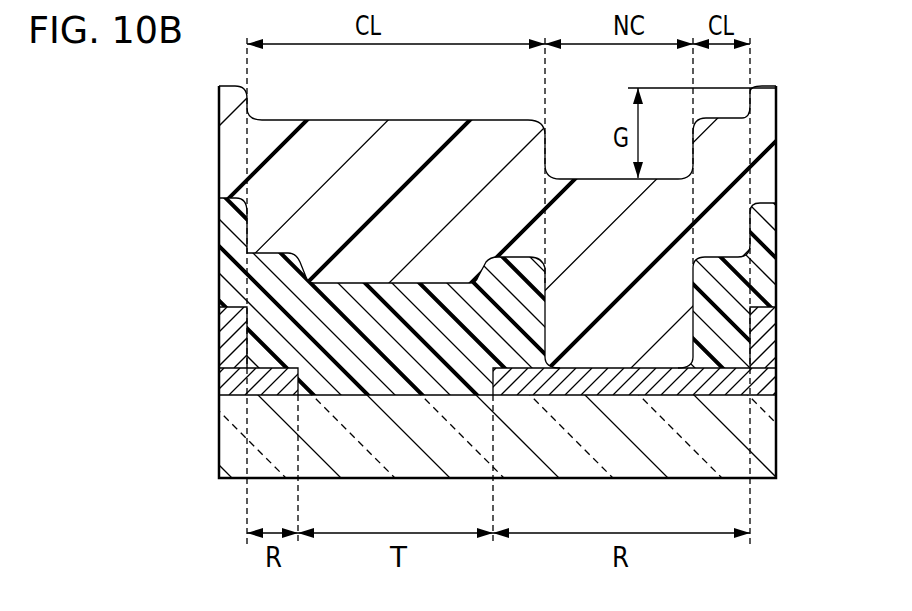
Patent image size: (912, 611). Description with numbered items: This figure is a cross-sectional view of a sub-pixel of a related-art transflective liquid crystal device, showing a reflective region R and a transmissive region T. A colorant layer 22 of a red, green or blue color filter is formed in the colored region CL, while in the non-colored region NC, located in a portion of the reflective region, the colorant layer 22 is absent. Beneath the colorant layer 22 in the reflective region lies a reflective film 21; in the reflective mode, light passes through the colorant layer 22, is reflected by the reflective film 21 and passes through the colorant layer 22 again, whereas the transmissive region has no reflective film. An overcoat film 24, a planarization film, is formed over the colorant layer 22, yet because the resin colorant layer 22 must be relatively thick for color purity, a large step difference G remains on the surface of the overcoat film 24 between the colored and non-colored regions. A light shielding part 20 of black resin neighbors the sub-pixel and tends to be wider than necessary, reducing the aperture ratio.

The light shielding part 20 is at (765, 323).
The reflective film 21 is at (770, 383).
The colorant layer 22 is at (282, 292).
The overcoat film 24 is at (270, 174).